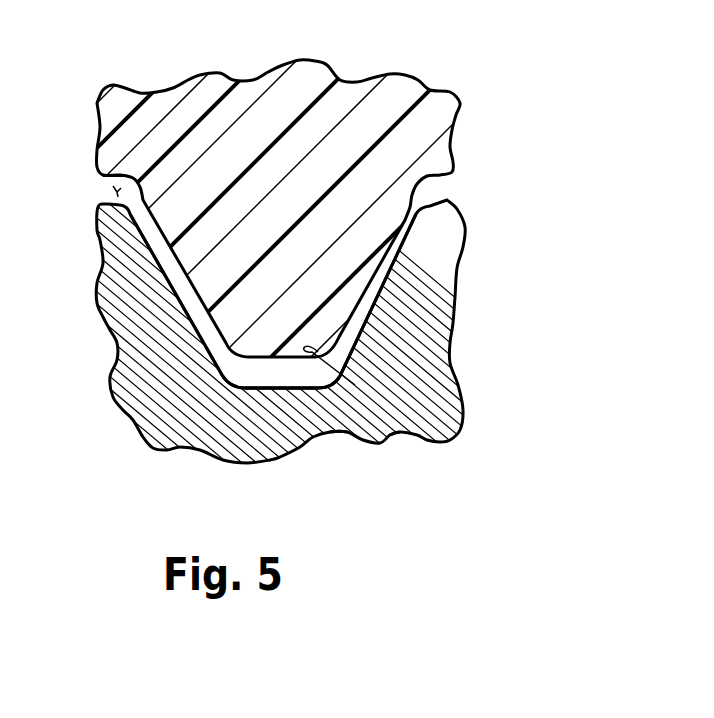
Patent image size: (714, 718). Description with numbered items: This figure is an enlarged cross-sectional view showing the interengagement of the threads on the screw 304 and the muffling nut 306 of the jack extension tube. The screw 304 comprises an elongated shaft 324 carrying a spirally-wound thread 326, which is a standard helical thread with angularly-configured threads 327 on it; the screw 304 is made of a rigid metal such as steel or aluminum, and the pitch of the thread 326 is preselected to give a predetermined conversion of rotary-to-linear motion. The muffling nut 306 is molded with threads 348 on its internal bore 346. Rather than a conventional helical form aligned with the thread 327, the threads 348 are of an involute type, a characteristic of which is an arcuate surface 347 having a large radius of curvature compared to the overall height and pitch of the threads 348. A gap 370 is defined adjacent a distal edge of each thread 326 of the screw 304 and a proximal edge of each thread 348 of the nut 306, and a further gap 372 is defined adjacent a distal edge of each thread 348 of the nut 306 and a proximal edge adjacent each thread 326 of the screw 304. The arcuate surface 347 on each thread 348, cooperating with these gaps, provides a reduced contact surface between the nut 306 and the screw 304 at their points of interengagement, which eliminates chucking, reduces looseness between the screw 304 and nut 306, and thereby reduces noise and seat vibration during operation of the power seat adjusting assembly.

The screw 304 is at (462, 368).
The muffling nut 306 is at (462, 135).
The elongated shaft 324 is at (342, 422).
The thread 326 is at (112, 202).
The angularly-configured threads 327 is at (183, 305).
The internal bore 346 is at (113, 188).
The arcuate surface 347 is at (183, 240).
The threads 348 is at (430, 437).
The gap 370 is at (429, 200).
The gap 372 is at (276, 376).